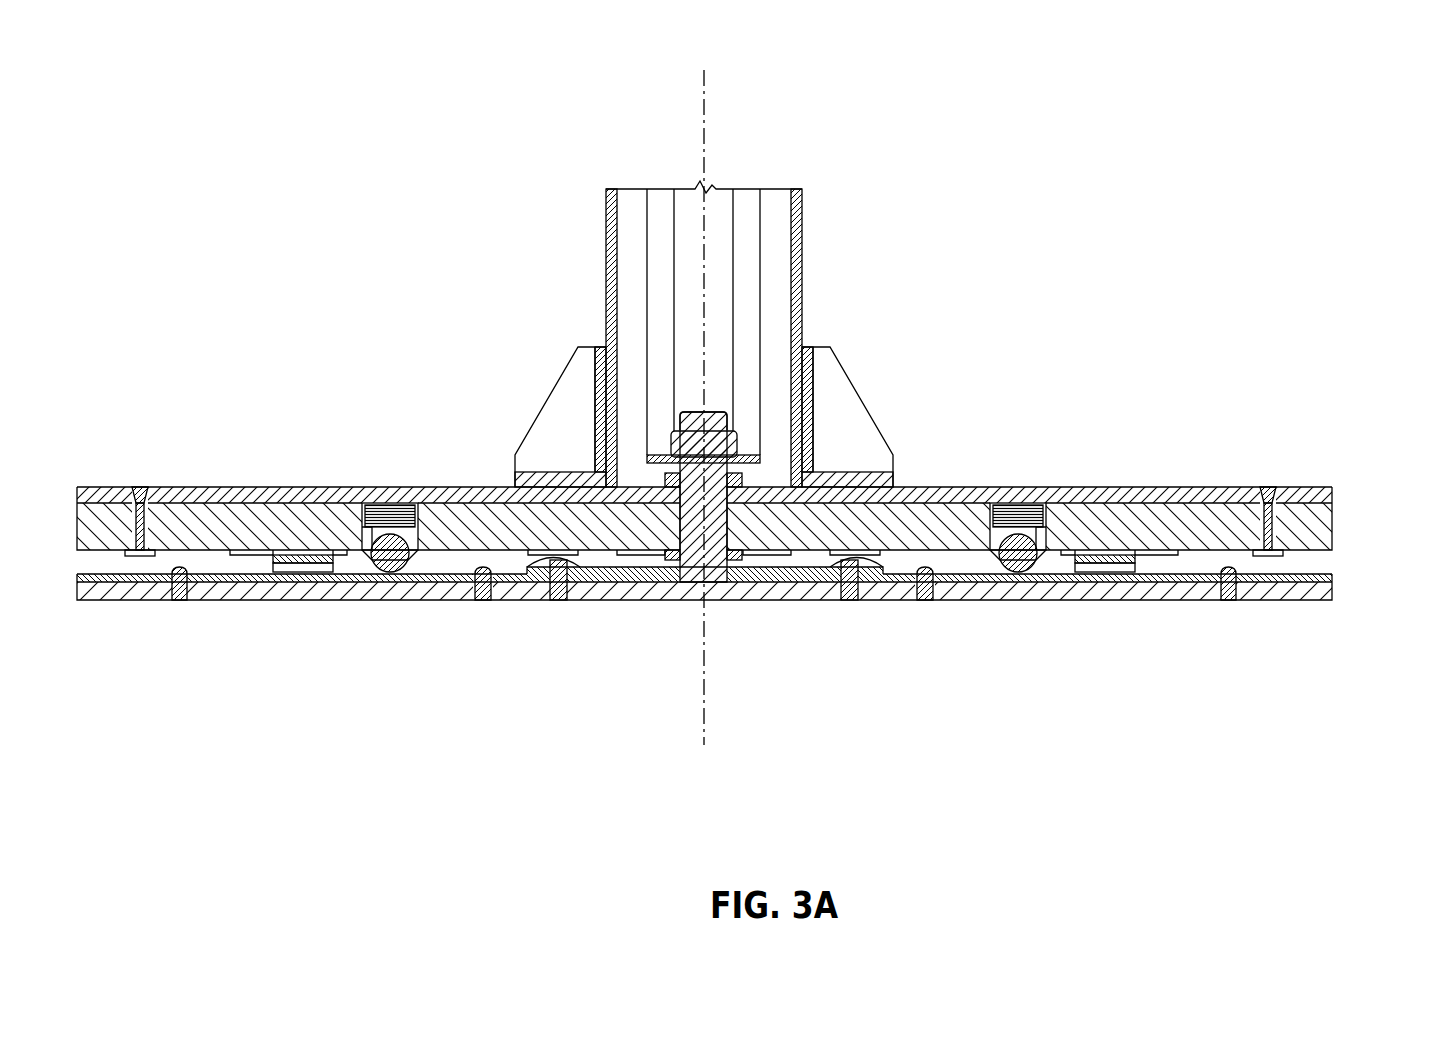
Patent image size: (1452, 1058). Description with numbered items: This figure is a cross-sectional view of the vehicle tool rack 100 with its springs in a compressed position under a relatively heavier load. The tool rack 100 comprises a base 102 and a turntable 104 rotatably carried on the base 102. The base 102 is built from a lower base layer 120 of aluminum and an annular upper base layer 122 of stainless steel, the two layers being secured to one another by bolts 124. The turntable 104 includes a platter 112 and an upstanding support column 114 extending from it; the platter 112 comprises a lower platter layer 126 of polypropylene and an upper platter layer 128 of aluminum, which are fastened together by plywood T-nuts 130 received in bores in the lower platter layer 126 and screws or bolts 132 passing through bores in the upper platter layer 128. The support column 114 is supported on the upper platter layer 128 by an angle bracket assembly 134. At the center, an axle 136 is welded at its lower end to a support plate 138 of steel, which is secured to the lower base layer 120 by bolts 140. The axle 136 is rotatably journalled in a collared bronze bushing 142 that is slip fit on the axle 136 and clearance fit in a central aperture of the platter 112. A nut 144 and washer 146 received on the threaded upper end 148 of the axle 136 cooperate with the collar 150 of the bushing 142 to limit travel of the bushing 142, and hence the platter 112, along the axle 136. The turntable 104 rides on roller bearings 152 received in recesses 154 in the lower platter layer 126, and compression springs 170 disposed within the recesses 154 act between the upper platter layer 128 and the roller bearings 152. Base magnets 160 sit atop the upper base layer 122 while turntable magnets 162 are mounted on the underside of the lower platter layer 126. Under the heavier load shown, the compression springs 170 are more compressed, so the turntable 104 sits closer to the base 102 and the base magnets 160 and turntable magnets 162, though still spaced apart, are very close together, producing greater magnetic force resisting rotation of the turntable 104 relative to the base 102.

The vehicle tool rack 100 is at (253, 158).
The base 102 is at (1336, 590).
The turntable 104 is at (938, 462).
The platter 112 is at (1335, 511).
The support column 114 is at (800, 212).
The lower base layer 120 is at (1300, 588).
The upper base layer 122 is at (1335, 578).
The bolts 124 is at (180, 600).
The lower platter layer 126 is at (1325, 533).
The upper platter layer 128 is at (1323, 497).
The plywood T-nuts 130 is at (127, 556).
The screws or bolts 132 is at (141, 490).
The angle bracket assembly 134 is at (555, 410).
The axle 136 is at (715, 563).
The support plate 138 is at (622, 576).
The bolts 140 is at (560, 600).
The collared bronze bushing 142 is at (735, 517).
The nut 144 is at (735, 438).
The washer 146 is at (760, 485).
The threaded upper end 148 is at (710, 417).
The collar 150 is at (740, 487).
The roller bearings 152 is at (400, 572).
The recesses 154 is at (356, 523).
The base magnets 160 is at (293, 572).
The turntable magnets 162 is at (293, 555).
The compression springs 170 is at (394, 514).